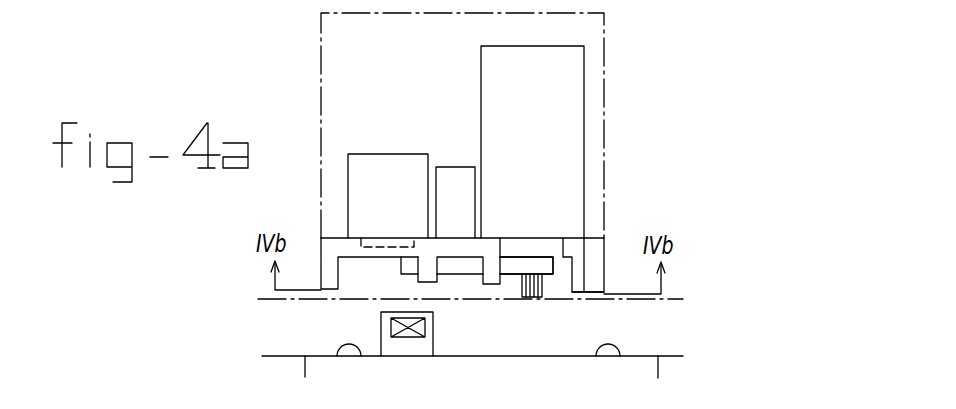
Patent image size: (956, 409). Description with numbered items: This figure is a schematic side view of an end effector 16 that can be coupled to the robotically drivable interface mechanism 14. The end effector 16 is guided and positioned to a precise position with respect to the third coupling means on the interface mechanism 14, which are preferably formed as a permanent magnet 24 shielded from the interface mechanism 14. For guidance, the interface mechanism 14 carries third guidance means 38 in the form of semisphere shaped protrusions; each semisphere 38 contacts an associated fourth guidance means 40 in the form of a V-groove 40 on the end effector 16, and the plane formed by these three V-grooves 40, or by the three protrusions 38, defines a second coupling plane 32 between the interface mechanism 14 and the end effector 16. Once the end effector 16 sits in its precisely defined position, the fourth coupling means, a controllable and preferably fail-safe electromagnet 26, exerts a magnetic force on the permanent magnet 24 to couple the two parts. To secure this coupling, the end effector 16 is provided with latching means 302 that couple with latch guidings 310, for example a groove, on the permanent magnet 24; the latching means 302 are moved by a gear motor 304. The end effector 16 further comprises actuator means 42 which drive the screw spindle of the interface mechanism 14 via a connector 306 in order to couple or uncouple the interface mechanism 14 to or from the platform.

The interface mechanism 14 is at (668, 361).
The end effector 16 is at (600, 133).
The permanent magnet 24 is at (398, 347).
The controllable electromagnet 26 is at (380, 163).
The second coupling plane 32 is at (262, 303).
The third guidance means 38 is at (350, 357).
The fourth guidance means 40 is at (595, 288).
The actuator means 42 is at (573, 89).
The latching means 302 is at (537, 267).
The gear motor 304 is at (452, 172).
The connector 306 is at (543, 284).
The latch guidings 310 is at (412, 338).